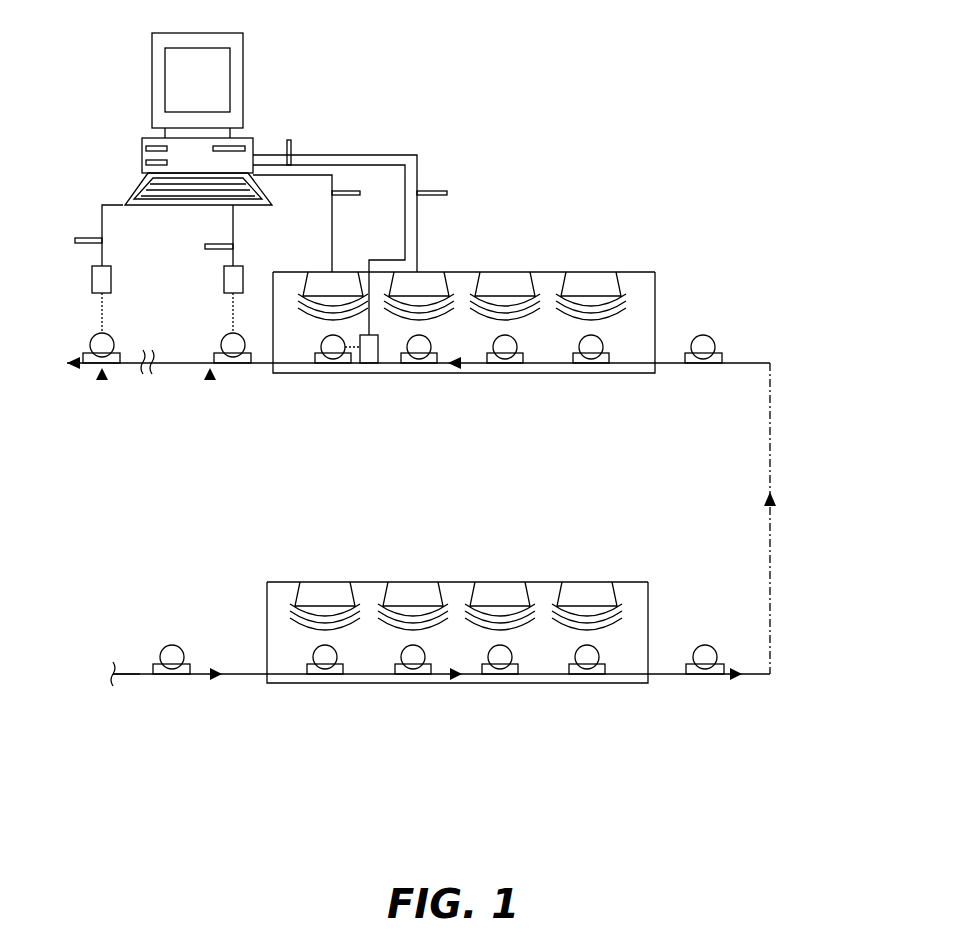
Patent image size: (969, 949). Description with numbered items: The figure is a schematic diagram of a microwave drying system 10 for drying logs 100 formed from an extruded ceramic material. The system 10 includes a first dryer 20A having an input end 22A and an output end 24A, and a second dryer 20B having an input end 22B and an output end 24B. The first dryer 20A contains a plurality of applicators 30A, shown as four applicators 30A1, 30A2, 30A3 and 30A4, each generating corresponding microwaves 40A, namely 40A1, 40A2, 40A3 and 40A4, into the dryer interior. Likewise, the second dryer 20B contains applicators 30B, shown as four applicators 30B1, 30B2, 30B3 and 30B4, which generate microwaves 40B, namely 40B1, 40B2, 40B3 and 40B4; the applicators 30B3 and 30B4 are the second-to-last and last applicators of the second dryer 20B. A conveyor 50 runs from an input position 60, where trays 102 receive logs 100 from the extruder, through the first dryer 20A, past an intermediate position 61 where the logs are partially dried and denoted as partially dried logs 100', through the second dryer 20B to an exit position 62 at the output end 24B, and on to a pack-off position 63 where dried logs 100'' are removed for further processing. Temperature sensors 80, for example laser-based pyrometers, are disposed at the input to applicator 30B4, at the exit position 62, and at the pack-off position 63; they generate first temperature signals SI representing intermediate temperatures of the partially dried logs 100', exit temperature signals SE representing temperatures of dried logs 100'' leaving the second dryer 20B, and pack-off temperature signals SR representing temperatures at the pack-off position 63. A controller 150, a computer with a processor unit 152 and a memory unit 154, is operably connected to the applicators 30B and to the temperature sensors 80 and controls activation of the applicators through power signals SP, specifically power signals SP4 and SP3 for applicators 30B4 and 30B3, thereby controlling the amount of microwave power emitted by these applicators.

The microwave drying system 10 is at (616, 48).
The controller 150 is at (152, 80).
The processor unit 152 is at (146, 148).
The memory unit 154 is at (146, 162).
The pack-off temperature signals SR is at (88, 238).
The exit temperature signals SE is at (205, 246).
The first temperature signals SI is at (289, 140).
The power signals SP is at (288, 193).
The power signal for second-to-last applicator SP3 is at (438, 191).
The power signal for last applicator SP4 is at (346, 191).
The temperature sensor 80 is at (92, 282).
The second dryer 20B is at (477, 306).
The first dryer 20A is at (490, 617).
The input end of second dryer 22B is at (655, 285).
The input end of first dryer 22A is at (267, 600).
The output end of second dryer 24B is at (273, 277).
The output end of first dryer 24A is at (648, 588).
The applicators of second dryer 30B is at (508, 240).
The first applicator of second dryer 30B1 is at (607, 278).
The second applicator of second dryer 30B2 is at (520, 278).
The second-to-last applicator of second dryer 30B3 is at (435, 278).
The last applicator of second dryer 30B4 is at (345, 278).
The applicators of first dryer 30A is at (427, 564).
The first applicator of first dryer 30A1 is at (320, 588).
The second applicator of first dryer 30A2 is at (412, 588).
The third applicator of first dryer 30A3 is at (500, 588).
The fourth applicator of first dryer 30A4 is at (588, 588).
The microwaves of second dryer 40B is at (430, 385).
The microwaves from applicator 30B1 40B1 is at (312, 320).
The microwaves from applicator 30B2 40B2 is at (403, 318).
The microwaves from applicator 30B3 40B3 is at (490, 318).
The microwaves from applicator 30B4 40B4 is at (575, 318).
The microwaves of first dryer 40A is at (545, 693).
The microwaves from applicator 30A1 40A1 is at (343, 630).
The microwaves from applicator 30A2 40A2 is at (431, 630).
The microwaves from applicator 30A3 40A3 is at (518, 630).
The microwaves from applicator 30A4 40A4 is at (605, 630).
The conveyor 50 is at (675, 365).
The input position 60 is at (120, 590).
The intermediate position 61 is at (772, 350).
The exit position 62 is at (210, 380).
The pack-off position 63 is at (102, 380).
The log 100 is at (145, 640).
The partially dried log 100' is at (733, 492).
The dried log 100'' is at (130, 332).
The tray 102 is at (712, 365).